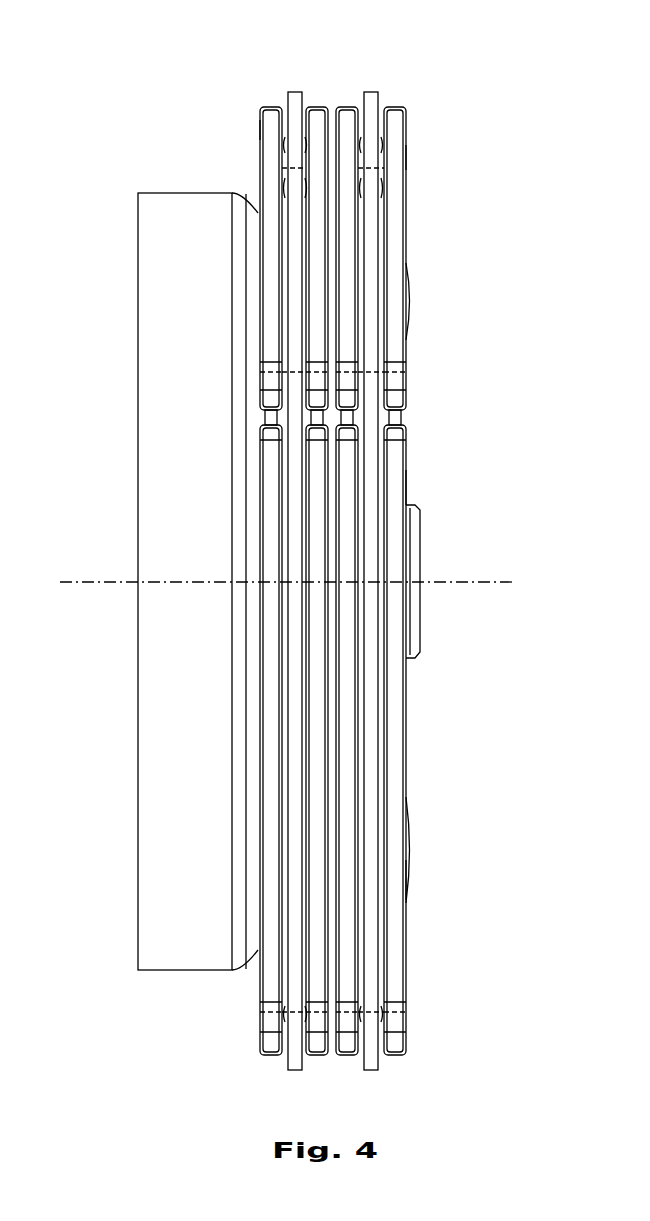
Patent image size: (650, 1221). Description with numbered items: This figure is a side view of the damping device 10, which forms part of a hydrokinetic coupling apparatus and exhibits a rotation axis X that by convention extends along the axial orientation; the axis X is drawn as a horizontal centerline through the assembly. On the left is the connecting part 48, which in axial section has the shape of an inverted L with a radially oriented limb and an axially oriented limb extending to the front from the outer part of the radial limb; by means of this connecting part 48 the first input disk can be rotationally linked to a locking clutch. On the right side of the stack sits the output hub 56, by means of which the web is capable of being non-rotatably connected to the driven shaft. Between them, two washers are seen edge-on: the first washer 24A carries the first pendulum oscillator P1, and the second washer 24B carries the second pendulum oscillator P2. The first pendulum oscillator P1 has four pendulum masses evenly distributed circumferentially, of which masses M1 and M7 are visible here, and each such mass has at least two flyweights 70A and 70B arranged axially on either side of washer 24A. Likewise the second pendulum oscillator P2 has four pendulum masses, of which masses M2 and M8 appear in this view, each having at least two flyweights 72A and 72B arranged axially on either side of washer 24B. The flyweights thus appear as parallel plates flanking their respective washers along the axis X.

The damping device 10 is at (446, 882).
The first washer 24A is at (294, 100).
The second washer 24B is at (372, 100).
The connecting part 48 is at (158, 267).
The output hub 56 is at (420, 550).
The flyweight 70A is at (265, 190).
The flyweight 70B is at (318, 120).
The flyweight 72A is at (345, 300).
The flyweight 72B is at (393, 223).
The first pendulum oscillator P1 is at (246, 125).
The second pendulum oscillator P2 is at (428, 150).
The pendulum mass M1 is at (247, 333).
The pendulum mass M2 is at (426, 347).
The pendulum mass M7 is at (250, 535).
The pendulum mass M8 is at (423, 483).
The rotation axis X is at (68, 586).